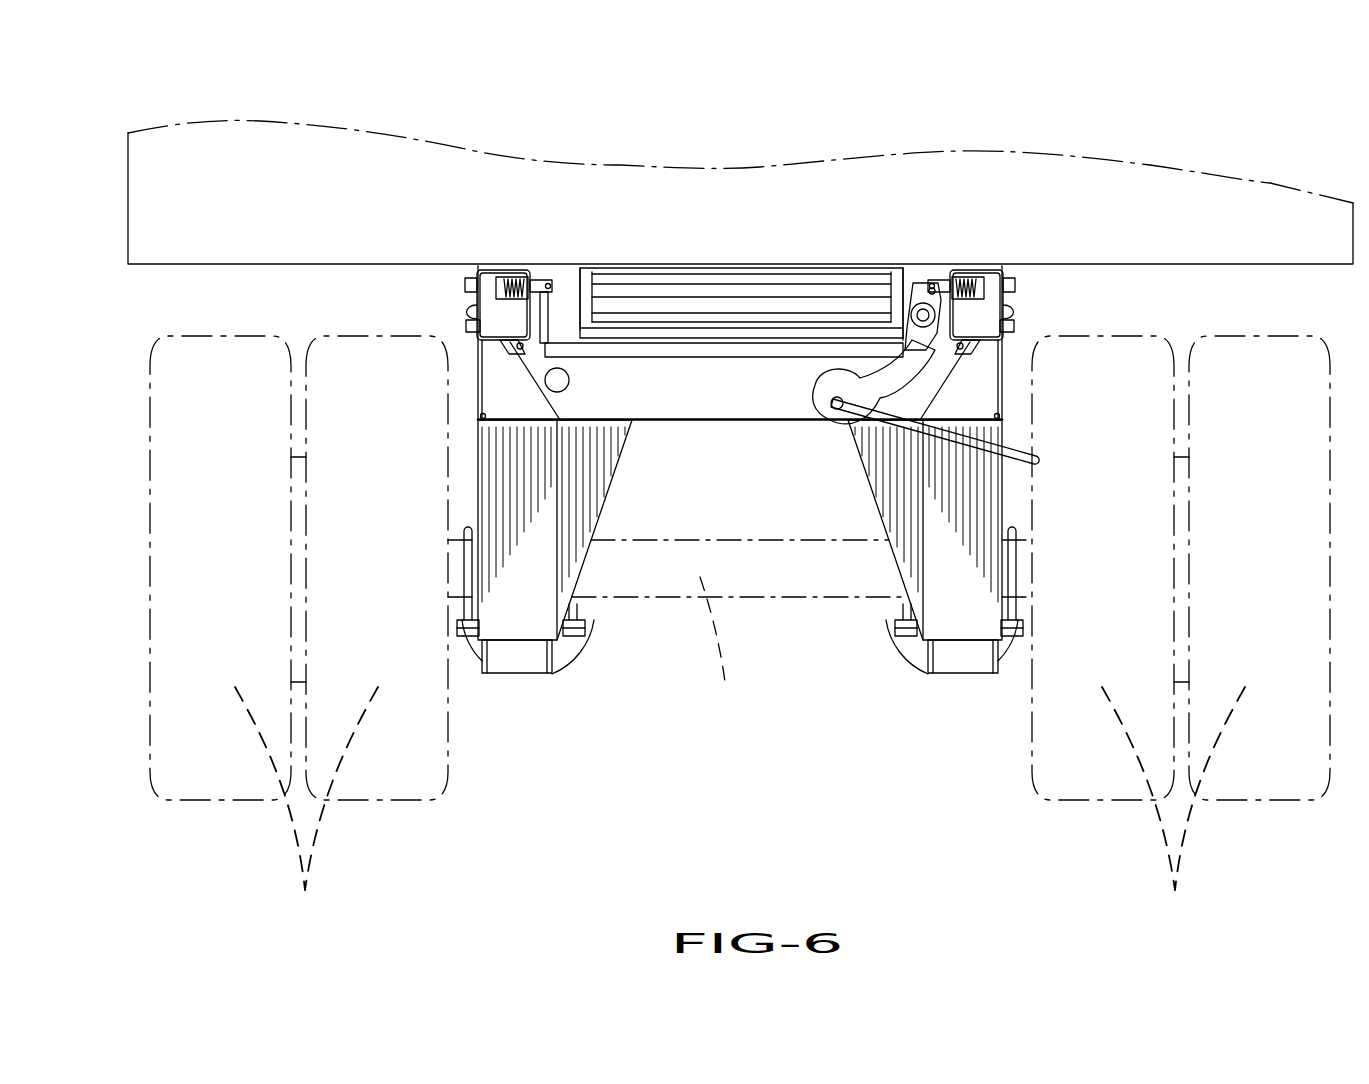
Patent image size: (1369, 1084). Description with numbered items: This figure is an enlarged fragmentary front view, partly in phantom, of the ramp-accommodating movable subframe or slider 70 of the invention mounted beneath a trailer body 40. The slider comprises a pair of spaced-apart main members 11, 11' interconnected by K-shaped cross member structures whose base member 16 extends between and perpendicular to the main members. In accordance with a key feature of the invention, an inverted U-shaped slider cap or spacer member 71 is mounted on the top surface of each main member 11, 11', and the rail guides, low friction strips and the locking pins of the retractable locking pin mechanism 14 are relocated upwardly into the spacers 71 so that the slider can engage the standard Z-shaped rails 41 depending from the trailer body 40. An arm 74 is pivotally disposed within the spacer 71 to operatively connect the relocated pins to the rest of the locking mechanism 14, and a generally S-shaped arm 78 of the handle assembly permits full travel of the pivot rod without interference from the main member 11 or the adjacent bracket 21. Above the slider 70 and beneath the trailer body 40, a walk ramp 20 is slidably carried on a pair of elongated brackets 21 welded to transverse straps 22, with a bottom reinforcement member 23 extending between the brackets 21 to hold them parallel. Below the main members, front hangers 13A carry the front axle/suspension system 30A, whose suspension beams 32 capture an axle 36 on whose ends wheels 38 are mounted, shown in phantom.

The trailer body 40 is at (333, 145).
The Z-shaped rail 41 is at (472, 268).
The slider cap or spacer member 71 is at (520, 270).
The arm 74 is at (548, 308).
The bracket 21 is at (583, 272).
The bottom reinforcement member 23 is at (632, 330).
The walk ramp 20 is at (690, 297).
The strap 22 is at (773, 268).
The main member 11 is at (804, 343).
The main member 11' is at (463, 344).
The retractable locking pin mechanism 14 is at (733, 357).
The base member 16 is at (645, 421).
The S-shaped arm 78 is at (827, 398).
The front hanger 13A is at (608, 504).
The ramp-accommodating movable subframe or slider 70 is at (745, 470).
The axle 36 is at (720, 646).
The suspension beam 32 is at (525, 658).
The front axle/suspension system 30A is at (518, 674).
The wheel 38 is at (740, 815).